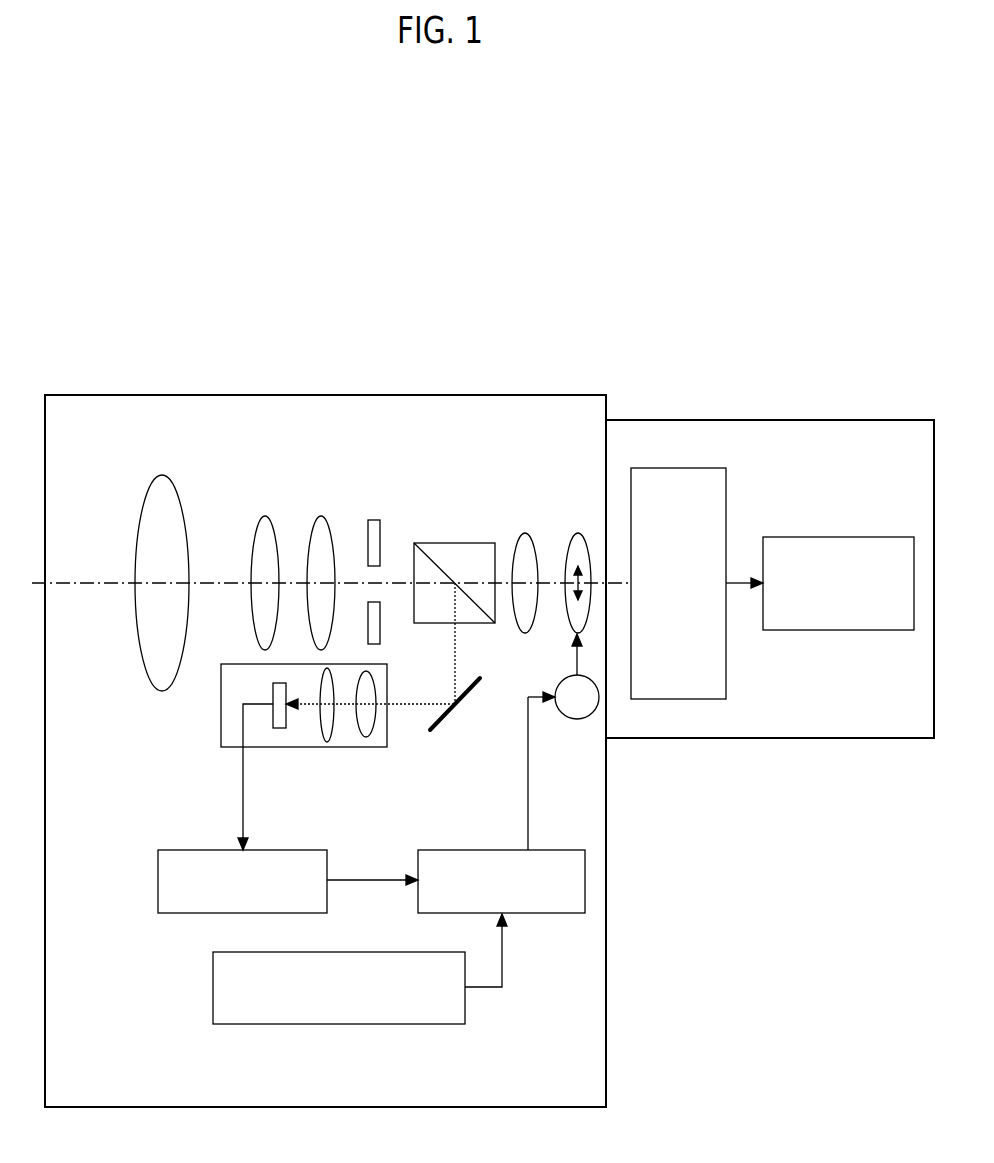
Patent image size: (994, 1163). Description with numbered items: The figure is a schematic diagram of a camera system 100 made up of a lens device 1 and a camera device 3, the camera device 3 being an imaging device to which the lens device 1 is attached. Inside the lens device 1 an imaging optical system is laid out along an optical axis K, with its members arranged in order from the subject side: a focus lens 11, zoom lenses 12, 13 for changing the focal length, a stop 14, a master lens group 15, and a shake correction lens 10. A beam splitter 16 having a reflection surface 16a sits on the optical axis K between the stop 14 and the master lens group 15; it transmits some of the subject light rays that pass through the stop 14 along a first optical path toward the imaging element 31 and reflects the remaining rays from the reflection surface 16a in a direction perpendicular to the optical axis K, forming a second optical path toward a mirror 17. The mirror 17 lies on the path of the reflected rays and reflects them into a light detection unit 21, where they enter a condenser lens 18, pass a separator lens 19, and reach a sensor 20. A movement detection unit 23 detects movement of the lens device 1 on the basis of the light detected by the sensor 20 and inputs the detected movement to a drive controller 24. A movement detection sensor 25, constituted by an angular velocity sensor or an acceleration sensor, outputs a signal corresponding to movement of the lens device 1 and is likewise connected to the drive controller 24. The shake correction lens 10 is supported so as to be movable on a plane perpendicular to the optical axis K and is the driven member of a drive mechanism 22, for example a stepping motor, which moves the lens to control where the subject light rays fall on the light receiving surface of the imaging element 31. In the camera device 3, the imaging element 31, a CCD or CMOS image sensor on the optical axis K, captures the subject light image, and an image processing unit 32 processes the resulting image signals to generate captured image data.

The camera system 100 is at (588, 385).
The lens device 1 is at (322, 395).
The camera device 3 is at (769, 420).
The optical axis K is at (72, 582).
The focus lens 11 is at (162, 475).
The zoom lens 12 is at (265, 515).
The zoom lens 13 is at (321, 515).
The stop 14 is at (373, 519).
The beam splitter 16 is at (449, 530).
The reflection surface 16a is at (427, 554).
The master lens group 15 is at (525, 533).
The shake correction lens 10 is at (578, 533).
The drive mechanism 22 is at (577, 720).
The mirror 17 is at (462, 702).
The light detection unit 21 is at (231, 663).
The condenser lens 18 is at (366, 739).
The separator lens 19 is at (329, 745).
The sensor 20 is at (281, 729).
The movement detection unit 23 is at (183, 850).
The drive controller 24 is at (474, 850).
The movement detection sensor 25 is at (363, 1024).
The imaging element 31 is at (672, 468).
The image processing unit 32 is at (897, 537).